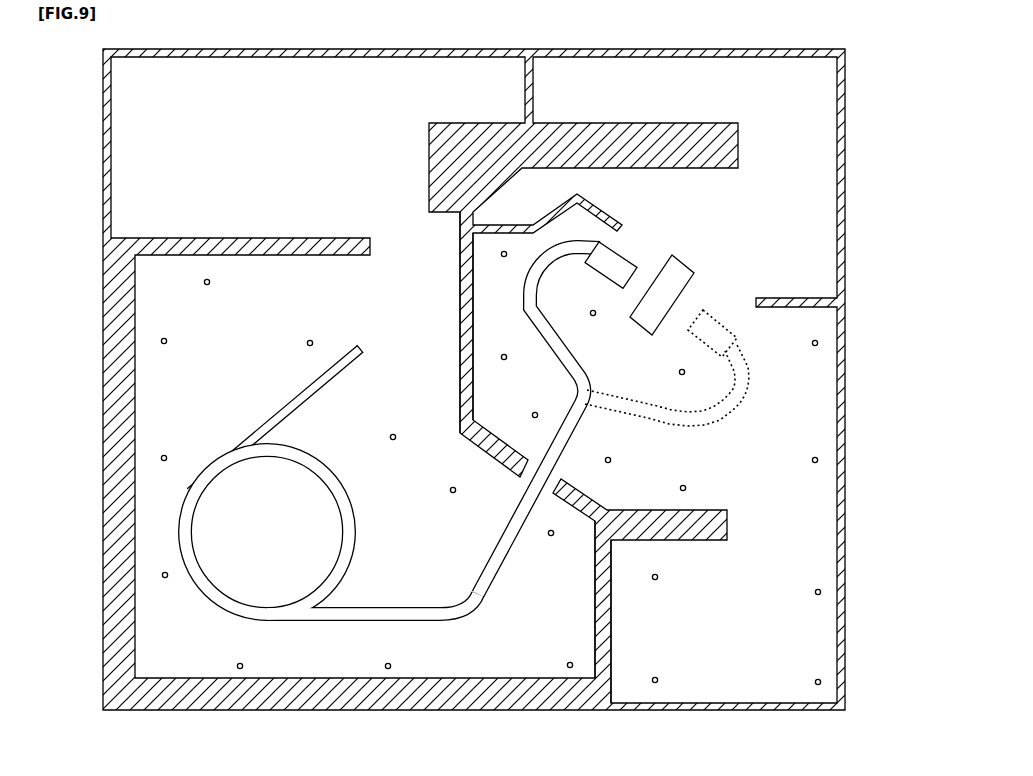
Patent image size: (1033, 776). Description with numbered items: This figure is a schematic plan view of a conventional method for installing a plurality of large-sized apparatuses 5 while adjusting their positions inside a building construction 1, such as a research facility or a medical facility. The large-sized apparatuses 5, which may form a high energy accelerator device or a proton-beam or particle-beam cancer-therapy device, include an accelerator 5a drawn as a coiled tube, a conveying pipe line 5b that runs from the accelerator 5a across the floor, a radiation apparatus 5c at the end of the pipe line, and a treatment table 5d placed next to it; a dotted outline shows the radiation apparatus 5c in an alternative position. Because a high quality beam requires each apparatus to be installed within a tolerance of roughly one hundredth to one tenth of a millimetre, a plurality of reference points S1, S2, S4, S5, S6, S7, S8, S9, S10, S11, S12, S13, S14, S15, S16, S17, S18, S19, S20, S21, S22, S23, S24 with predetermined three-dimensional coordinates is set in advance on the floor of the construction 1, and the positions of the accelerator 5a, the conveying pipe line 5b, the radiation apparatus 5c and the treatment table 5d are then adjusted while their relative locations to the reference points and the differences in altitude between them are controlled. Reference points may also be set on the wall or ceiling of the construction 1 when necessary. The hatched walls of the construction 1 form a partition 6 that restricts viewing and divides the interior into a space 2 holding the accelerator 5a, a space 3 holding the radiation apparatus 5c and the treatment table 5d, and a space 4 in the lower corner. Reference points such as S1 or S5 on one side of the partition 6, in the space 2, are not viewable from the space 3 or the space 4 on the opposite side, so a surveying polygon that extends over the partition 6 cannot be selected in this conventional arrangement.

The building construction 1 is at (850, 166).
The space 2 is at (248, 374).
The space 3 is at (796, 420).
The space 4 is at (753, 638).
The large-sized apparatuses 5 is at (474, 477).
The accelerator 5a is at (265, 618).
The conveying pipe line 5b is at (486, 598).
The radiation apparatus 5c is at (617, 253).
The treatment table 5d is at (693, 273).
The partition 6 is at (460, 300).
The reference point S1 is at (192, 282).
The reference point S2 is at (165, 355).
The reference point S4 is at (240, 388).
The reference point S5 is at (168, 593).
The reference point S6 is at (229, 654).
The reference point S7 is at (377, 653).
The reference point S8 is at (557, 653).
The reference point S9 is at (553, 551).
The reference point S10 is at (460, 507).
The reference point S11 is at (397, 455).
The reference point S12 is at (682, 578).
The reference point S13 is at (666, 666).
The reference point S14 is at (792, 667).
The reference point S15 is at (792, 580).
The reference point S16 is at (797, 331).
The reference point S17 is at (797, 475).
The reference point S18 is at (699, 472).
The reference point S19 is at (622, 444).
The reference point S20 is at (531, 403).
The reference point S21 is at (508, 341).
The reference point S22 is at (503, 269).
The reference point S23 is at (589, 300).
The reference point S24 is at (657, 372).